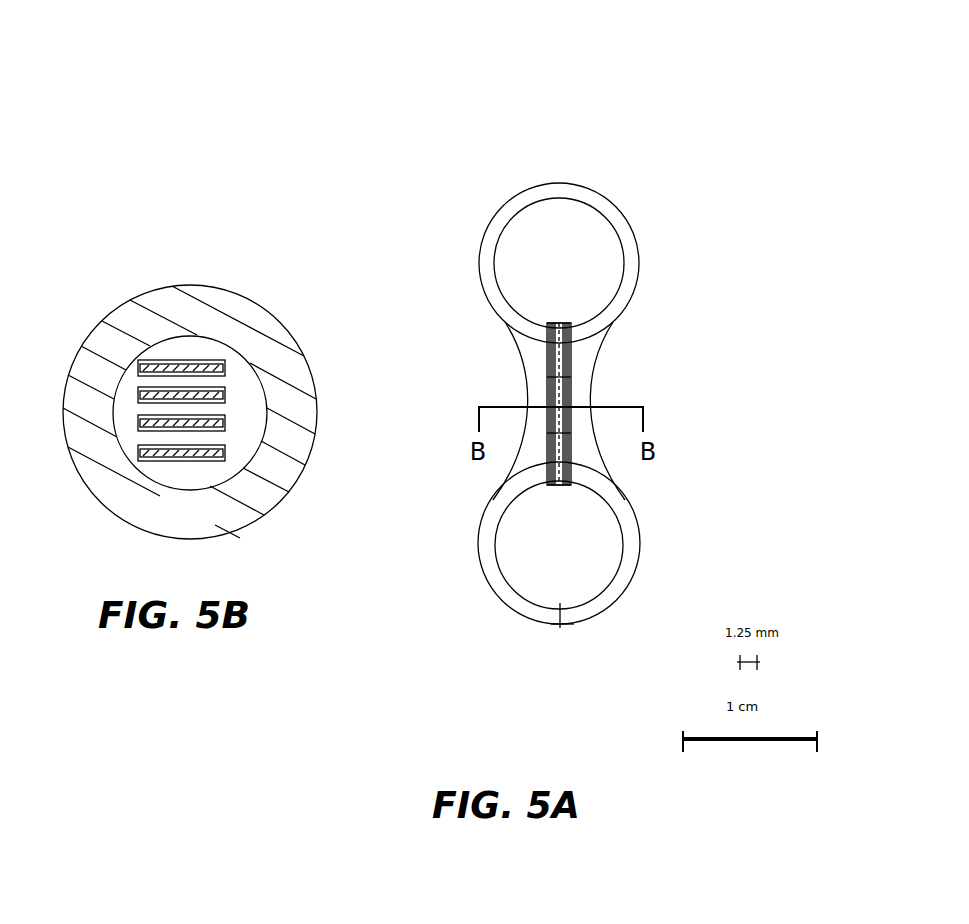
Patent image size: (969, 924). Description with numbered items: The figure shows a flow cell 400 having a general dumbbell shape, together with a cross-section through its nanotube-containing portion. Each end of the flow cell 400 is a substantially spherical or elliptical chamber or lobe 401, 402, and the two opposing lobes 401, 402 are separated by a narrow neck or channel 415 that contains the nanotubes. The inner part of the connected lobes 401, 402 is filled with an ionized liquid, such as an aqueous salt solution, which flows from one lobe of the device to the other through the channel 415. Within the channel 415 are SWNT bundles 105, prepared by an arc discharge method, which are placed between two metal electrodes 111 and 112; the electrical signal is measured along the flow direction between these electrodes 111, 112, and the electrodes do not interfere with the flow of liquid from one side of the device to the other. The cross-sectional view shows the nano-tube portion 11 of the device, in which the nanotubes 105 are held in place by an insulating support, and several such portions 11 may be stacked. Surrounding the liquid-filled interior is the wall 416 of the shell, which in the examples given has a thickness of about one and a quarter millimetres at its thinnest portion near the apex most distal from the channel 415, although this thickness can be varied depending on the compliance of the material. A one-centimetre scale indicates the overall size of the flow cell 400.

In FIG. 5A, the flow cell 400 is at (582, 365).
In FIG. 5A, the chamber or lobe 401 is at (496, 234).
In FIG. 5A, the chamber or lobe 402 is at (494, 582).
In FIG. 5A, the neck or channel 415 is at (565, 357).
In FIG. 5B, the neck or channel 415 is at (188, 348).
In FIG. 5A, the SWNT bundles 105 is at (567, 388).
In FIG. 5A, the metal electrode 111 is at (543, 332).
In FIG. 5A, the metal electrode 112 is at (540, 479).
In FIG. 5B, the wall 416 is at (168, 524).
In FIG. 5B, the nano-tube portion 11 is at (204, 386).